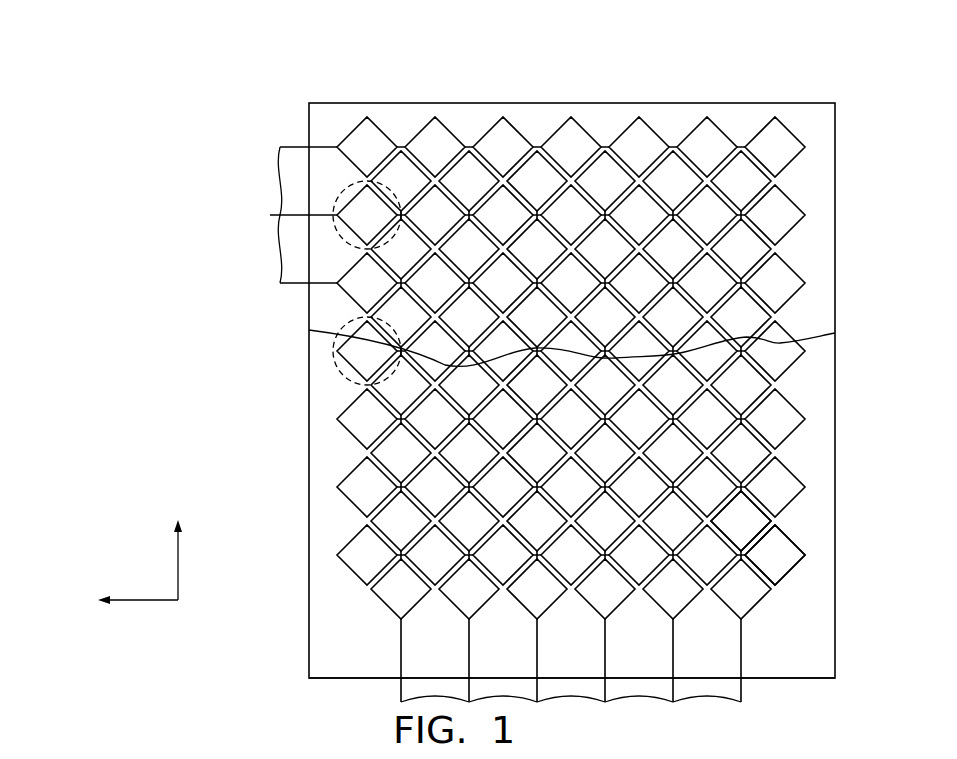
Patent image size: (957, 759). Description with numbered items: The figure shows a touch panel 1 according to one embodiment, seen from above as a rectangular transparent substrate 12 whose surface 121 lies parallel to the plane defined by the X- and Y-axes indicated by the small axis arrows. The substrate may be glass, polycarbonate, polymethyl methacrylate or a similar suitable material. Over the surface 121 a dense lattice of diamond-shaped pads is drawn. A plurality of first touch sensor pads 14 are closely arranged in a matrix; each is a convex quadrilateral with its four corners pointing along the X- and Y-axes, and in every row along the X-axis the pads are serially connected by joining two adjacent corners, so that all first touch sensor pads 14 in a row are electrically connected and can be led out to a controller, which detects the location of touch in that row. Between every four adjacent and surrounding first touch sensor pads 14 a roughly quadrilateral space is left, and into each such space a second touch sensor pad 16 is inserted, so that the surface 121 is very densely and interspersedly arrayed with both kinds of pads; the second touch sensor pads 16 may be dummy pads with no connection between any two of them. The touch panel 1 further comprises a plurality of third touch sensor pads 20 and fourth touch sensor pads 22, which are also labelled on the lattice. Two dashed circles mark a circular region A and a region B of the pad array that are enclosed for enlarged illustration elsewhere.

The touch panel 1 is at (104, 96).
The transparent substrate 12 is at (299, 488).
The surface 121 is at (327, 637).
The first touch sensor pads 14 is at (755, 523).
The second touch sensor pads 16 is at (788, 557).
The third touch sensor pads 20 is at (469, 167).
The fourth touch sensor pads 22 is at (572, 130).
The circular region A is at (345, 378).
The region B is at (345, 183).